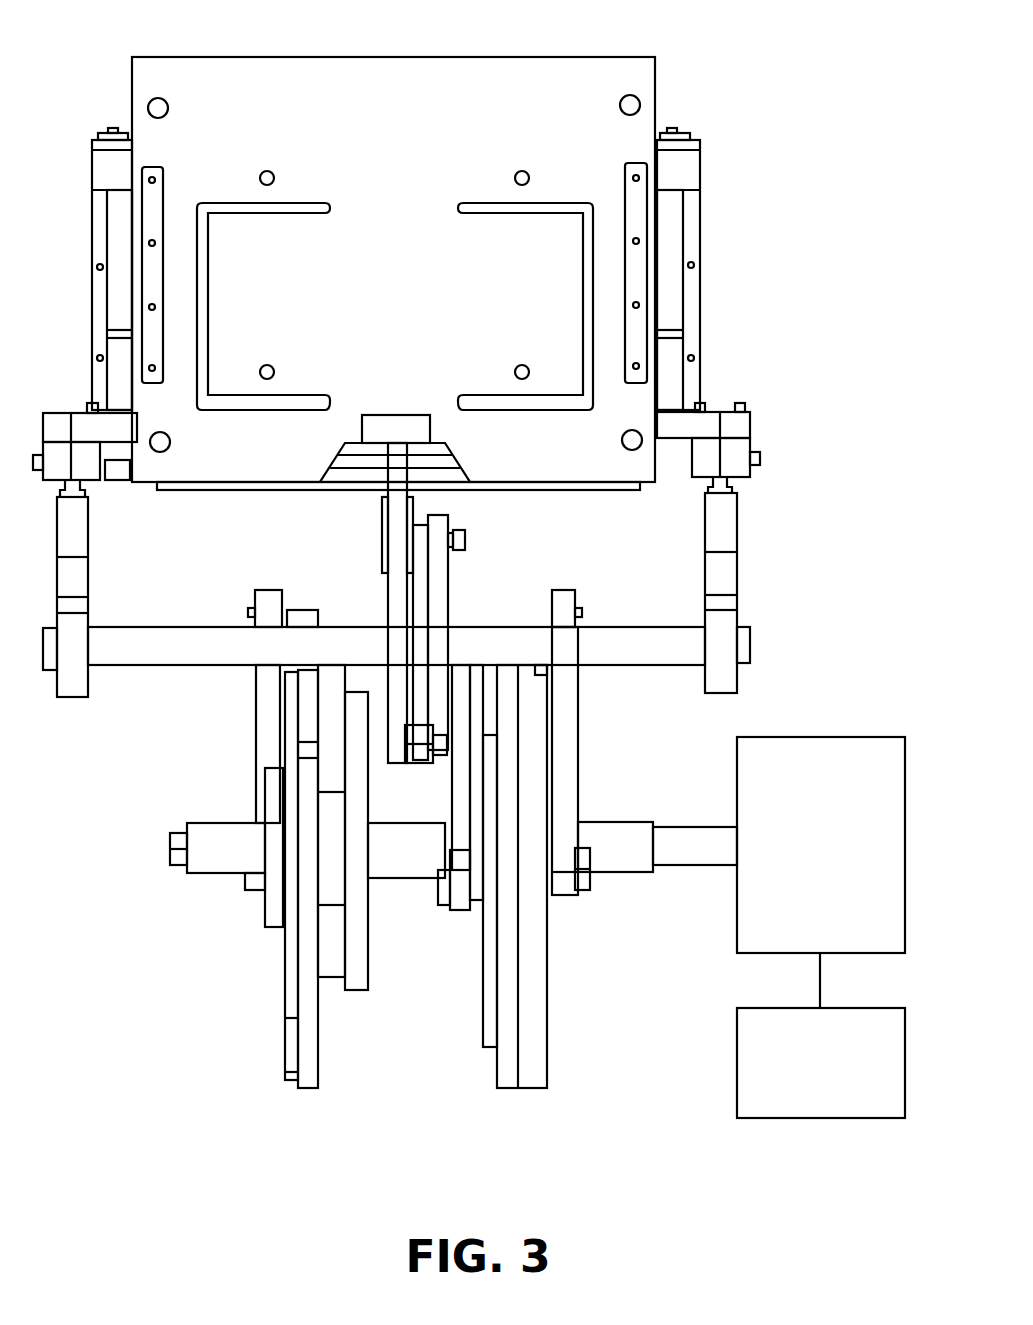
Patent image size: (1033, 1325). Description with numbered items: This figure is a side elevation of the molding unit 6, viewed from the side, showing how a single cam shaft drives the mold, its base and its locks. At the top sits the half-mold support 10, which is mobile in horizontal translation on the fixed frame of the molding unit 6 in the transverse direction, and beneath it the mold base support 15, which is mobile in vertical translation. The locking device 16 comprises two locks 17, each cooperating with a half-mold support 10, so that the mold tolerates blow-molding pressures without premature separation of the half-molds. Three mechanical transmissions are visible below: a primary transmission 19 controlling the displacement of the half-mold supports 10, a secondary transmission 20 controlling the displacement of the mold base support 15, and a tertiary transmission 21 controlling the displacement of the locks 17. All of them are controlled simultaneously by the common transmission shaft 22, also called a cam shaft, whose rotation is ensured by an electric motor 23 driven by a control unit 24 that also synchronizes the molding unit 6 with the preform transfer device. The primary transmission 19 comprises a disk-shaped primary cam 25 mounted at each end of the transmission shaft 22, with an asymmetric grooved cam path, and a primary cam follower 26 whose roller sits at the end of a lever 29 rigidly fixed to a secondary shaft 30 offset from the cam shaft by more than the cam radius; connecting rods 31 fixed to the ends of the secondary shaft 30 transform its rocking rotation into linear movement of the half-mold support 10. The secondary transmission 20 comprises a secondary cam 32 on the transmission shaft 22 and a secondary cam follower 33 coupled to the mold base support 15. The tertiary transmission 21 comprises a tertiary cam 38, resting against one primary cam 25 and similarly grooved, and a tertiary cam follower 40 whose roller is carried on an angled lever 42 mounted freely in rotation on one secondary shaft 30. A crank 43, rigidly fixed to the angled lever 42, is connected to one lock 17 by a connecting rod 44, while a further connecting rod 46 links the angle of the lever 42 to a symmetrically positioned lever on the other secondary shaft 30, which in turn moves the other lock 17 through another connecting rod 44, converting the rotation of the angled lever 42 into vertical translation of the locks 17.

The molding unit 6 is at (812, 232).
The half-mold support 10 is at (702, 383).
The mold base support 15 is at (336, 490).
The locking device 16 is at (431, 88).
The lock 17 is at (384, 283).
The primary transmission 19 is at (246, 588).
The secondary transmission 20 is at (334, 980).
The tertiary transmission 21 is at (444, 767).
The transmission shaft 22 is at (217, 862).
The electric motor 23 is at (801, 850).
The control unit 24 is at (801, 1065).
The primary cam 25 is at (537, 1090).
The primary cam follower 26 is at (585, 897).
The lever 29 is at (570, 795).
The secondary shaft 30 is at (634, 666).
The connecting rod 31 is at (78, 583).
The secondary cam 32 is at (358, 955).
The secondary cam follower 33 is at (368, 990).
The tertiary cam 38 is at (490, 1065).
The tertiary cam follower 40 is at (467, 918).
The angled lever 42 is at (462, 832).
The crank 43 is at (445, 625).
The connecting rod 44 is at (392, 600).
The connecting rod 46 is at (432, 592).